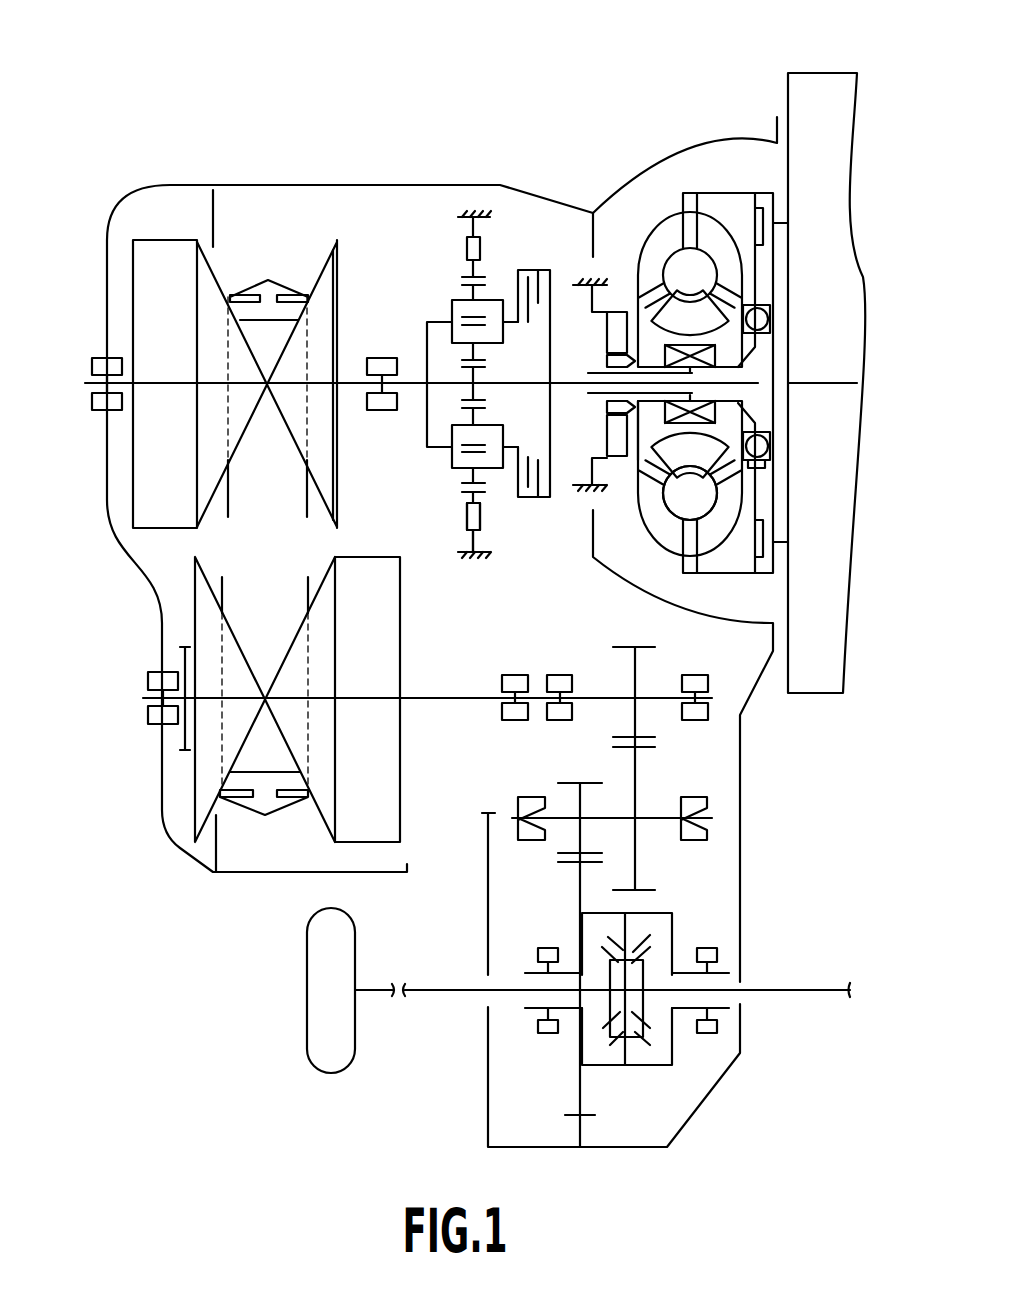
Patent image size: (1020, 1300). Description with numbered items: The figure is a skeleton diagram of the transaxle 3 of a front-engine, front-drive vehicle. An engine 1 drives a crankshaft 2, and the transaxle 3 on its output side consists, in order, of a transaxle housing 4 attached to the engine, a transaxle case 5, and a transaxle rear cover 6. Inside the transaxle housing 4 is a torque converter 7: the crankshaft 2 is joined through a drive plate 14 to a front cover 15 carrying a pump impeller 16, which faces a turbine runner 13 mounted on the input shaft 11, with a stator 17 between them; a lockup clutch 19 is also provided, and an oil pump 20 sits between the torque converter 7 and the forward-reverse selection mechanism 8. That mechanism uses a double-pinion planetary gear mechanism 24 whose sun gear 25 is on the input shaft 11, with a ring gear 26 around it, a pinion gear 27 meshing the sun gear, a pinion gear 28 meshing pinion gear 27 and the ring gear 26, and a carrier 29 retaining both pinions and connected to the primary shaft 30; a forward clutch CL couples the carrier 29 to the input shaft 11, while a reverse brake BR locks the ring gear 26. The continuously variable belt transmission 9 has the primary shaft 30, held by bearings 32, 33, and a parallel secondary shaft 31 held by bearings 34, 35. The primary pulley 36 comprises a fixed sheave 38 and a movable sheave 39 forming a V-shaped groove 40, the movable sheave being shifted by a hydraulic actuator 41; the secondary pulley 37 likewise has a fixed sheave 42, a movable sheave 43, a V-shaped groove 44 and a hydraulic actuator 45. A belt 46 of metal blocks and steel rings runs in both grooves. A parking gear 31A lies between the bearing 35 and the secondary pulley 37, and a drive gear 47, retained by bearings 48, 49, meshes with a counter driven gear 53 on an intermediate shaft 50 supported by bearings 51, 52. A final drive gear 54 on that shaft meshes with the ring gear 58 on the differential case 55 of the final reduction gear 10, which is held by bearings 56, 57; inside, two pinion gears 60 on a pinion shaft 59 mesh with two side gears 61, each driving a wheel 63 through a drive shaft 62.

The engine 1 is at (806, 65).
The crankshaft 2 is at (822, 380).
The transaxle 3 is at (343, 122).
The transaxle housing 4 is at (700, 140).
The transaxle case 5 is at (445, 184).
The transaxle rear cover 6 is at (107, 236).
The torque converter 7 is at (672, 212).
The forward-reverse selection mechanism 8 is at (498, 268).
The continuously variable belt transmission 9 is at (262, 270).
The final reduction gear 10 is at (567, 1068).
The input shaft 11 is at (574, 380).
The turbine runner 13 is at (719, 527).
The drive plate 14 is at (790, 528).
The front cover 15 is at (777, 200).
The pump impeller 16 is at (641, 530).
The stator 17 is at (688, 455).
The lockup clutch 19 is at (748, 200).
The oil pump 20 is at (618, 302).
The planetary gear mechanism 24 is at (440, 318).
The sun gear 25 is at (482, 402).
The ring gear 26 is at (482, 498).
The pinion gear 27 is at (482, 359).
The pinion gear 28 is at (462, 486).
The carrier 29 is at (496, 424).
The primary shaft 30 is at (354, 382).
The secondary shaft 31 is at (454, 700).
The parking gear 31A is at (185, 750).
The bearing 32 is at (382, 418).
The bearing 33 is at (100, 418).
The bearing 34 is at (512, 672).
The bearing 35 is at (146, 672).
The primary pulley 36 is at (293, 470).
The secondary pulley 37 is at (247, 628).
The fixed sheave 38 is at (328, 485).
The movable sheave 39 is at (211, 467).
The V-shaped groove 40 is at (267, 333).
The hydraulic actuator 41 is at (180, 257).
The fixed sheave 42 is at (192, 577).
The movable sheave 43 is at (295, 652).
The V-shaped groove 44 is at (270, 750).
The hydraulic actuator 45 is at (385, 842).
The belt 46 is at (272, 296).
The drive gear 47 is at (618, 646).
The bearing 48 is at (560, 672).
The bearing 49 is at (700, 722).
The intermediate shaft 50 is at (657, 820).
The bearing 51 is at (529, 842).
The bearing 52 is at (712, 822).
The counter driven gear 53 is at (648, 748).
The final drive gear 54 is at (566, 783).
The differential case 55 is at (642, 1068).
The bearing 56 is at (536, 1030).
The bearing 57 is at (707, 948).
The ring gear 58 is at (592, 862).
The pinion shaft 59 is at (620, 1050).
The pinion gear 60 is at (605, 945).
The side gear 61 is at (645, 948).
The drive shaft 62 is at (437, 992).
The wheel 63 is at (318, 997).
The reverse brake BR is at (467, 521).
The forward clutch CL is at (545, 268).